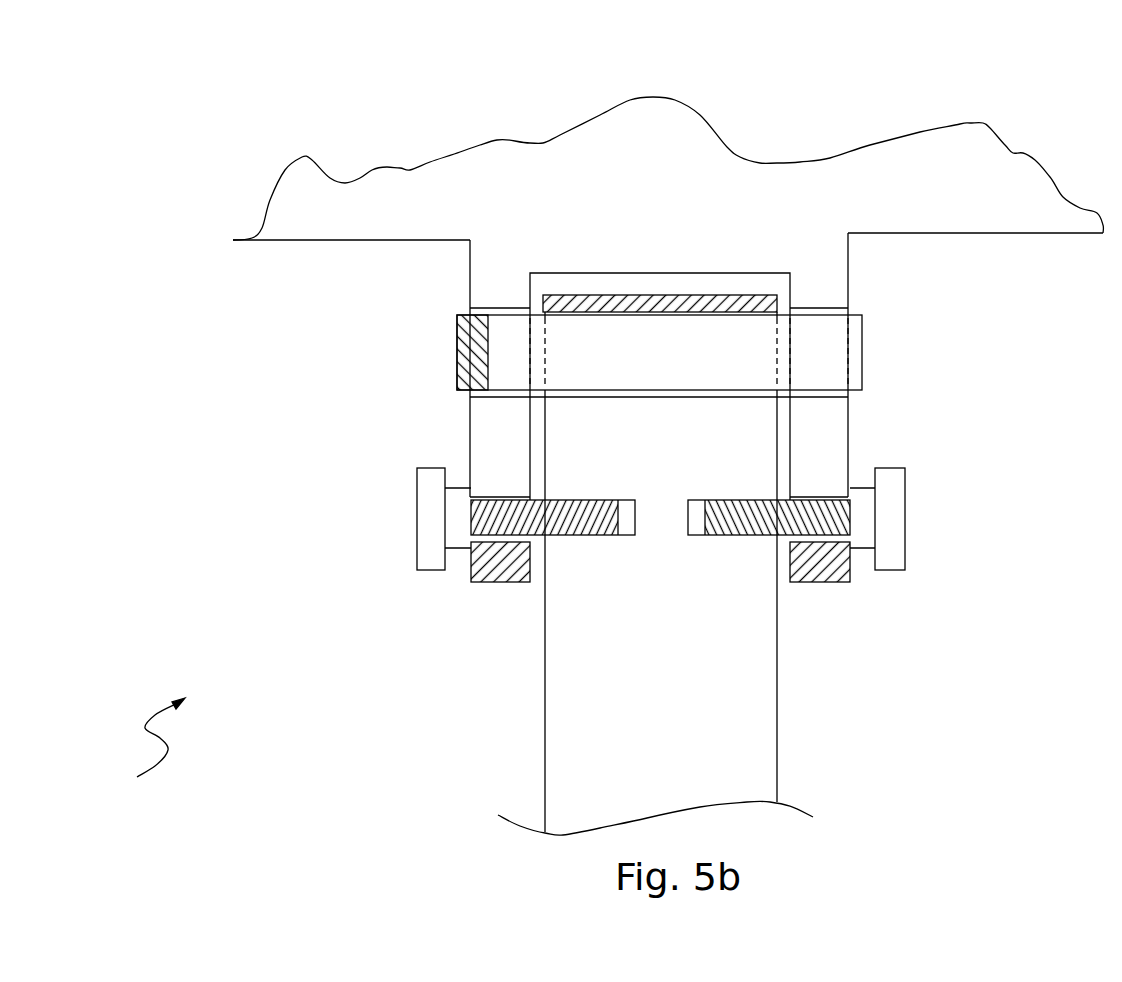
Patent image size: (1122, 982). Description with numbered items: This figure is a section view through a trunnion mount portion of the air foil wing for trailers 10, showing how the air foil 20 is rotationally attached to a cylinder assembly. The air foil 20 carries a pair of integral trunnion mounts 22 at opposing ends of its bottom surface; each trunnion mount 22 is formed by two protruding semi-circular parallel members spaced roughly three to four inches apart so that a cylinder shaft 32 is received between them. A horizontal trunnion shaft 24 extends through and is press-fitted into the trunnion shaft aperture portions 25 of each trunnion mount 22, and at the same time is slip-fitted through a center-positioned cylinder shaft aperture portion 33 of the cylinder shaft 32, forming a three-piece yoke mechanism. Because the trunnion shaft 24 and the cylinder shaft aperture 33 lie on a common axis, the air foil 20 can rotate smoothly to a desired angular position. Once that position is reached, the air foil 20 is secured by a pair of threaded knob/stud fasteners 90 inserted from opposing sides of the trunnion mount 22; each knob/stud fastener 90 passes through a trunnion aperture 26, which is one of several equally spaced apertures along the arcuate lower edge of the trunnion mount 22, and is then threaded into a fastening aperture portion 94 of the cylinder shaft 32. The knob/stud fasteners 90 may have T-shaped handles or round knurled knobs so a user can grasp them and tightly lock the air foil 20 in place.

The air foil wing for trailers 10 is at (144, 749).
The air foil 20 is at (972, 123).
The trunnion mount 22 is at (482, 448).
The trunnion shaft 24 is at (457, 357).
The trunnion shaft aperture portion 25 is at (483, 307).
The trunnion aperture 26 is at (493, 552).
The cylinder shaft portion 32 is at (745, 772).
The cylinder shaft aperture portion 33 is at (742, 395).
The knob/stud fastener 90 is at (582, 535).
The fastening aperture portion 94 is at (695, 538).